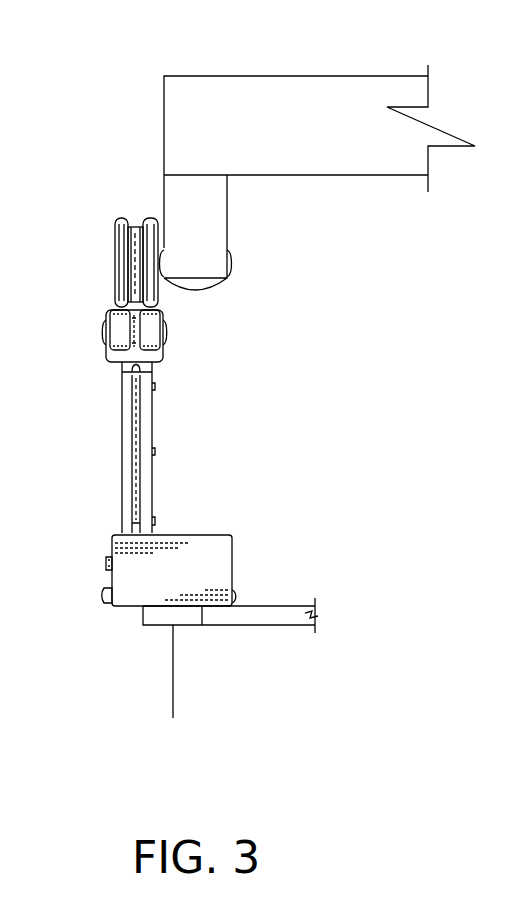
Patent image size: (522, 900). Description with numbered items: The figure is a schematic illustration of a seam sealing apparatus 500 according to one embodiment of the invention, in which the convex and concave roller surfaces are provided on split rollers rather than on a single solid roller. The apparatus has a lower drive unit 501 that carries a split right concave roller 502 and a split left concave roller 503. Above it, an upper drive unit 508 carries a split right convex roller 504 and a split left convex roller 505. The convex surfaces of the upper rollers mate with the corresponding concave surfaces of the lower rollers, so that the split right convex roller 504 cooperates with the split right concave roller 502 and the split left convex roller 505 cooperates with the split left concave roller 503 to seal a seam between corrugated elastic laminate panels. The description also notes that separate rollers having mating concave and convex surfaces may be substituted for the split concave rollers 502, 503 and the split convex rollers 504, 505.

The seam sealing apparatus 500 is at (280, 107).
The lower drive unit 501 is at (155, 452).
The split right concave roller 502 is at (150, 328).
The split left concave roller 503 is at (120, 330).
The split right convex roller 504 is at (147, 228).
The split left convex roller 505 is at (120, 258).
The upper drive unit 508 is at (205, 226).